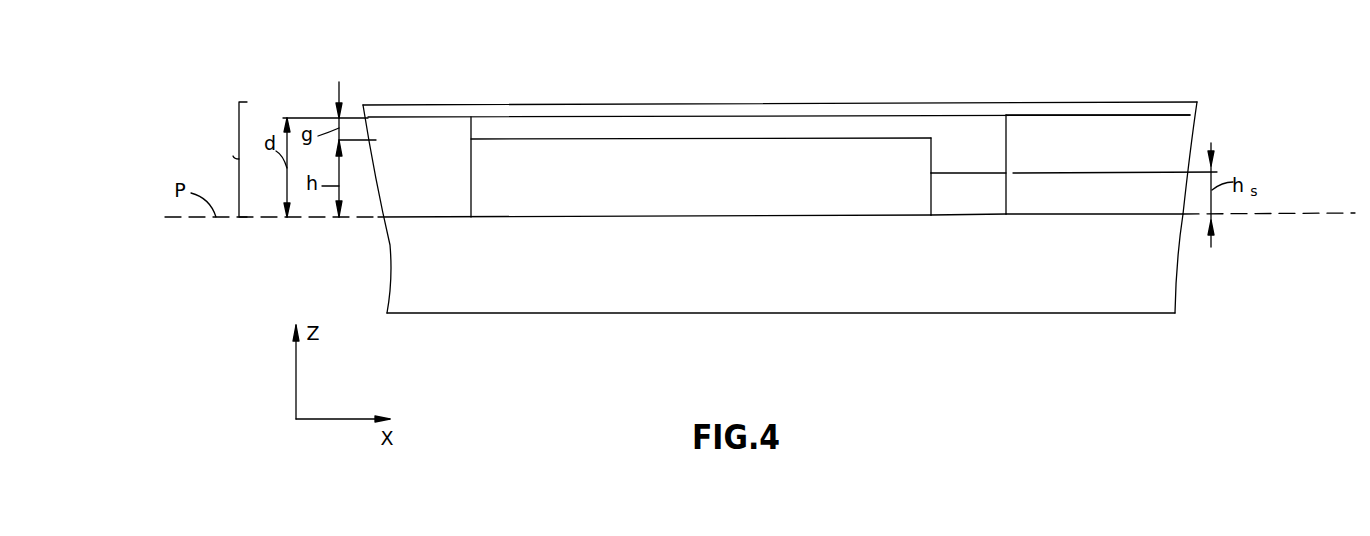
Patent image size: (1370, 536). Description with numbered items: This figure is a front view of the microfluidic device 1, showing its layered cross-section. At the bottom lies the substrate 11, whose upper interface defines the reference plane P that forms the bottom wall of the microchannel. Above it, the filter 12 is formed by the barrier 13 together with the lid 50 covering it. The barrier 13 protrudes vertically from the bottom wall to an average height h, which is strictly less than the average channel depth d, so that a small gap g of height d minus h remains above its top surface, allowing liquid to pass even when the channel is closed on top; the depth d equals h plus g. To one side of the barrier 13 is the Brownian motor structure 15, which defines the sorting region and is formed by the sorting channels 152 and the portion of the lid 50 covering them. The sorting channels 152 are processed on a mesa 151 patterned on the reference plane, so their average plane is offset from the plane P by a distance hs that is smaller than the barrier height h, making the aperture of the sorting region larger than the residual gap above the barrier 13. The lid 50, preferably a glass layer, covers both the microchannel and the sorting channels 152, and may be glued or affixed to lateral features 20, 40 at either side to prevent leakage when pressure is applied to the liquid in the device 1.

The microfluidic device 1 is at (885, 337).
The substrate 11 is at (552, 308).
The filter 12 is at (233, 156).
The barrier 13 is at (700, 147).
The Brownian motor structure 15 is at (954, 146).
The mesa 151 is at (993, 193).
The sorting channels 152 is at (972, 172).
The lateral feature 20 is at (408, 199).
The lateral feature 40 is at (1056, 133).
The lid 50 is at (548, 104).